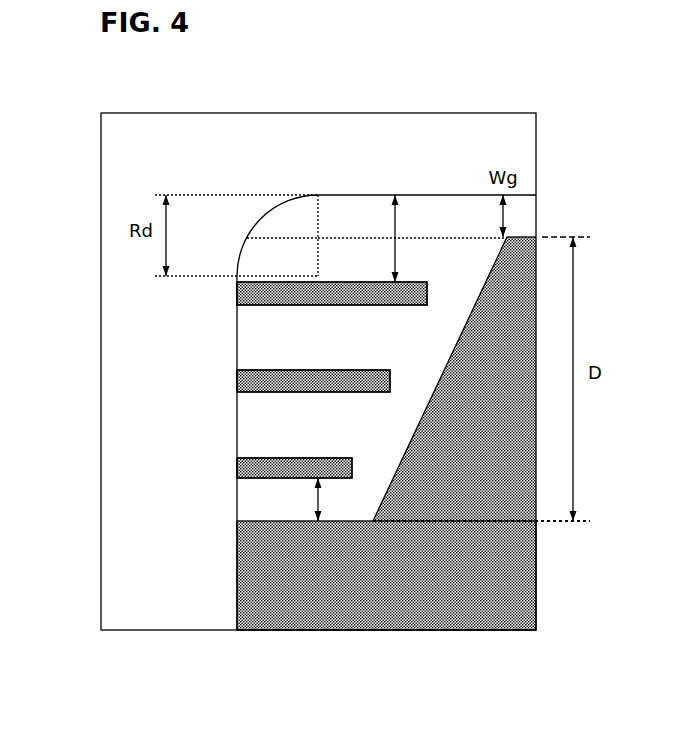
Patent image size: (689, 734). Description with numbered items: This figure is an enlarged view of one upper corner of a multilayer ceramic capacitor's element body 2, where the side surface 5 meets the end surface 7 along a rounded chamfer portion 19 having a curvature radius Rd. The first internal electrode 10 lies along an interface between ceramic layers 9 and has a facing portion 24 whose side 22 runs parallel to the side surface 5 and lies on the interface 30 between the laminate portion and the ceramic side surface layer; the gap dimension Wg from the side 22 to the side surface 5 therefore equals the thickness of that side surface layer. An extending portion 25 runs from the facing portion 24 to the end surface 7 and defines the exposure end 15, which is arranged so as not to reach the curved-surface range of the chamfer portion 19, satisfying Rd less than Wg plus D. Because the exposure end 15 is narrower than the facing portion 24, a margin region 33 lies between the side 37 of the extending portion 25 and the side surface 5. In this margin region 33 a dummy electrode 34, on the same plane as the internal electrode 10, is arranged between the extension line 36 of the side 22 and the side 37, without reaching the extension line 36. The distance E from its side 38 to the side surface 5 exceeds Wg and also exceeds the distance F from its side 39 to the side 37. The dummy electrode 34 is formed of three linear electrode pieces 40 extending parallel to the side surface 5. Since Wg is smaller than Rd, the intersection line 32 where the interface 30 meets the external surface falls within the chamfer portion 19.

The element body 2 is at (470, 195).
The side surface 5 is at (519, 195).
The end surface 7 is at (237, 510).
The ceramic layer 9 is at (250, 335).
The first internal electrode 10 is at (431, 632).
The exposure end 15 is at (237, 575).
The rounded chamfer portion 19 is at (270, 210).
The side of the facing portion 22 is at (519, 237).
The facing portion 24 is at (503, 612).
The extending portion 25 is at (258, 600).
The interface 30 is at (287, 238).
The intersection line 32 is at (247, 238).
The margin region 33 is at (362, 431).
The dummy electrode 34 is at (379, 282).
The extension line 36 is at (426, 237).
The side of the extending portion 37 is at (264, 521).
The side of the dummy electrode 38 is at (342, 282).
The side of the dummy electrode 39 is at (284, 478).
The electrode pieces 40 is at (237, 466).